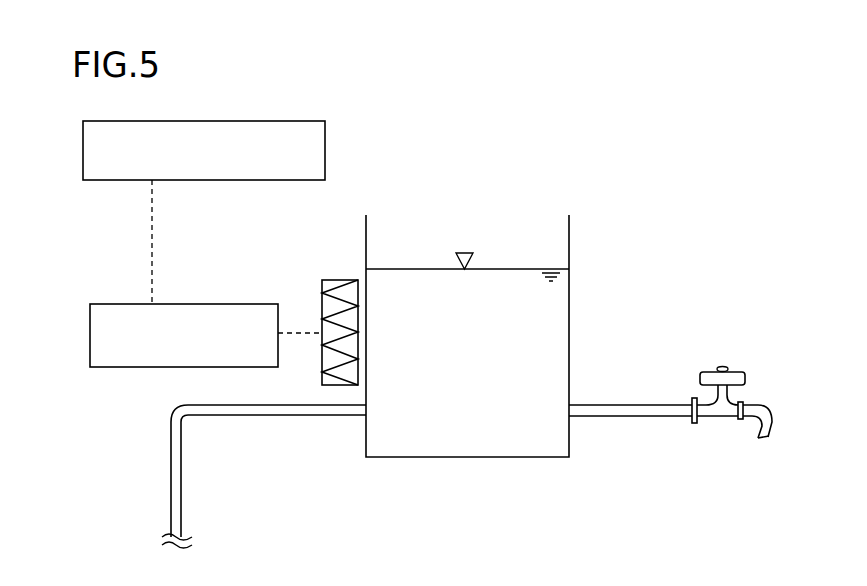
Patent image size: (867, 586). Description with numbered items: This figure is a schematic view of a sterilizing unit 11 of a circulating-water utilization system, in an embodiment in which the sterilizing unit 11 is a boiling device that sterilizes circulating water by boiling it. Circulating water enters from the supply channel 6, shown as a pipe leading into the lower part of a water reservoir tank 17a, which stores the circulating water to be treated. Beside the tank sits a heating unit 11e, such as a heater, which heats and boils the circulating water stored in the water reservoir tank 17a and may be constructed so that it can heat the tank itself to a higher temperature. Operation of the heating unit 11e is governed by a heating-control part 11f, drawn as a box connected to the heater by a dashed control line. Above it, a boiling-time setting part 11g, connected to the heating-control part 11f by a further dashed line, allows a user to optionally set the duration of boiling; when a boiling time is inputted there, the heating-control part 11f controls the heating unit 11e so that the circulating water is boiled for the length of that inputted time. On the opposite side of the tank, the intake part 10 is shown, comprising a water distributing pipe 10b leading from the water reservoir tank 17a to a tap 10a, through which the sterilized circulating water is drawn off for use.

The sterilizing unit 11 is at (549, 80).
The boiling-time setting part 11g is at (325, 148).
The heating-control part 11f is at (118, 303).
The heating unit 11e is at (336, 279).
The water reservoir tank 17a is at (566, 233).
The supply channel 6 is at (181, 478).
The intake part 10 is at (755, 321).
The water distributing pipe 10b is at (630, 405).
The tap 10a is at (722, 366).